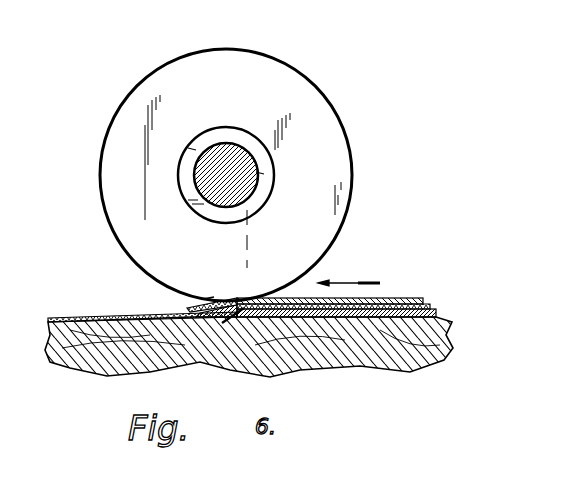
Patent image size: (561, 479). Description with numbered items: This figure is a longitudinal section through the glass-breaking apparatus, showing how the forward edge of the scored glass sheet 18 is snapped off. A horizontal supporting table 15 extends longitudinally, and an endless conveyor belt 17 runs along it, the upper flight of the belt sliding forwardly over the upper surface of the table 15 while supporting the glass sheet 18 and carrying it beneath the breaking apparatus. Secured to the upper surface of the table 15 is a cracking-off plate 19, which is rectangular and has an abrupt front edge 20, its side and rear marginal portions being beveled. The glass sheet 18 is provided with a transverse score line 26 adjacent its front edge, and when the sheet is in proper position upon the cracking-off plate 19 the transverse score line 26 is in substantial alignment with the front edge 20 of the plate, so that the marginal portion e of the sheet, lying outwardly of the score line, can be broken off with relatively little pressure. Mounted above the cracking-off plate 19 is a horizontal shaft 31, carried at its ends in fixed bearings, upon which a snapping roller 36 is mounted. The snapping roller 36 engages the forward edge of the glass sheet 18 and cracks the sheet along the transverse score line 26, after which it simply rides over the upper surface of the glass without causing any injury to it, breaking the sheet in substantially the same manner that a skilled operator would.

The snapping roller 36 is at (307, 97).
The shaft 31 is at (227, 152).
The supporting table 15 is at (52, 363).
The endless conveyor belt 17 is at (84, 318).
The transverse score line 26 is at (236, 298).
The glass sheet 18 is at (412, 298).
The cracking-off plate 19 is at (436, 313).
The front edge 20 is at (222, 323).
The marginal portion e is at (206, 298).